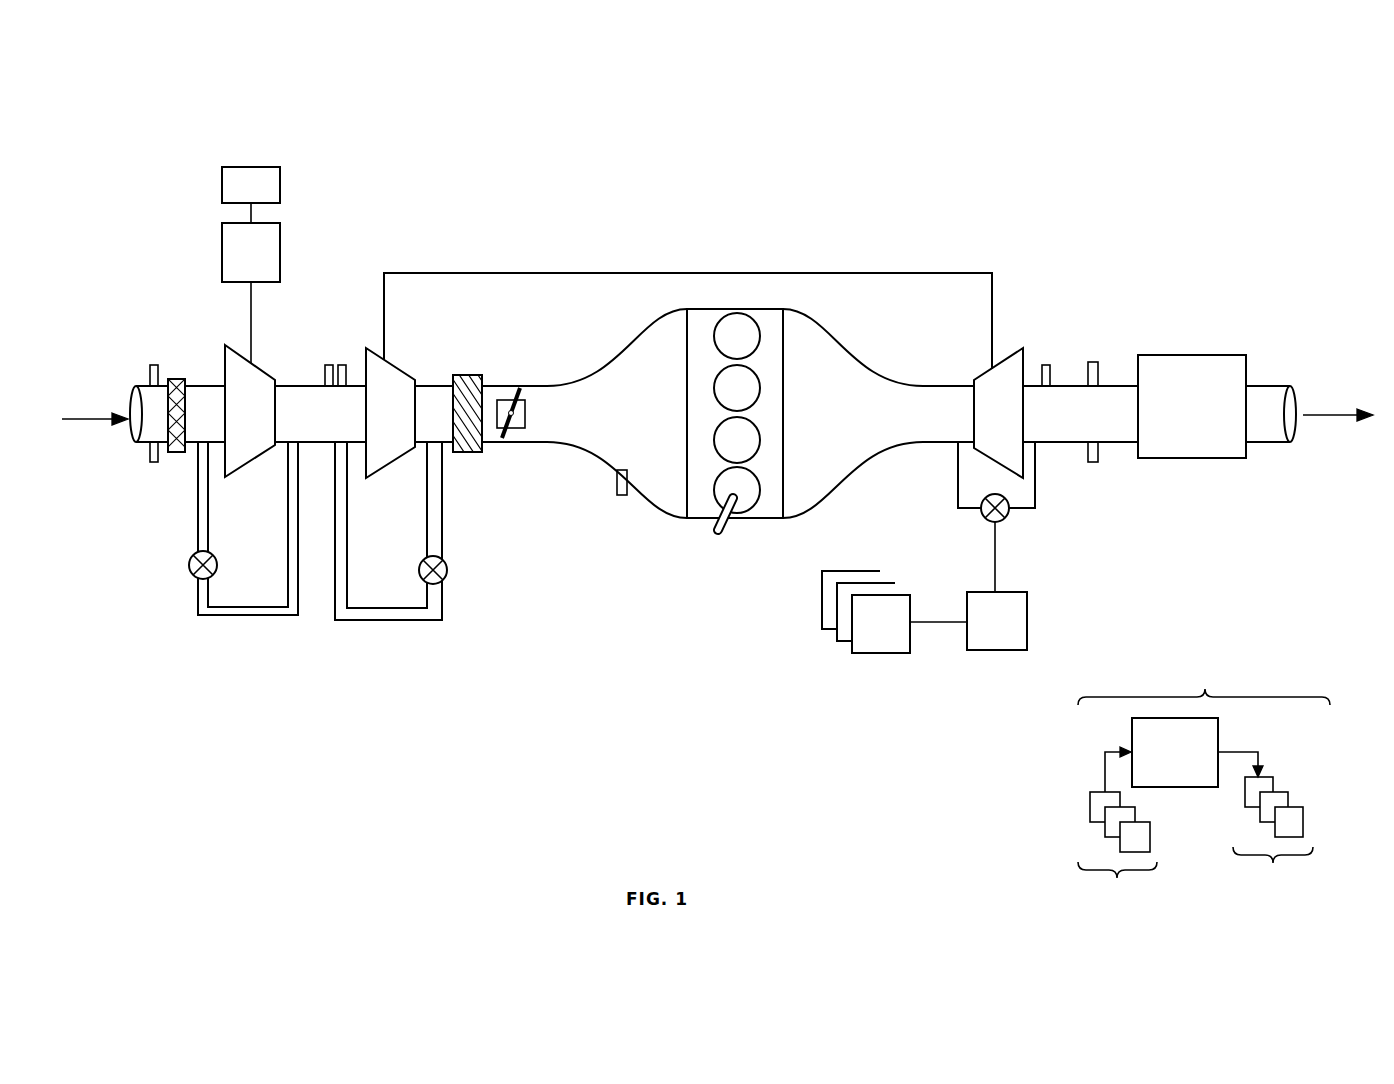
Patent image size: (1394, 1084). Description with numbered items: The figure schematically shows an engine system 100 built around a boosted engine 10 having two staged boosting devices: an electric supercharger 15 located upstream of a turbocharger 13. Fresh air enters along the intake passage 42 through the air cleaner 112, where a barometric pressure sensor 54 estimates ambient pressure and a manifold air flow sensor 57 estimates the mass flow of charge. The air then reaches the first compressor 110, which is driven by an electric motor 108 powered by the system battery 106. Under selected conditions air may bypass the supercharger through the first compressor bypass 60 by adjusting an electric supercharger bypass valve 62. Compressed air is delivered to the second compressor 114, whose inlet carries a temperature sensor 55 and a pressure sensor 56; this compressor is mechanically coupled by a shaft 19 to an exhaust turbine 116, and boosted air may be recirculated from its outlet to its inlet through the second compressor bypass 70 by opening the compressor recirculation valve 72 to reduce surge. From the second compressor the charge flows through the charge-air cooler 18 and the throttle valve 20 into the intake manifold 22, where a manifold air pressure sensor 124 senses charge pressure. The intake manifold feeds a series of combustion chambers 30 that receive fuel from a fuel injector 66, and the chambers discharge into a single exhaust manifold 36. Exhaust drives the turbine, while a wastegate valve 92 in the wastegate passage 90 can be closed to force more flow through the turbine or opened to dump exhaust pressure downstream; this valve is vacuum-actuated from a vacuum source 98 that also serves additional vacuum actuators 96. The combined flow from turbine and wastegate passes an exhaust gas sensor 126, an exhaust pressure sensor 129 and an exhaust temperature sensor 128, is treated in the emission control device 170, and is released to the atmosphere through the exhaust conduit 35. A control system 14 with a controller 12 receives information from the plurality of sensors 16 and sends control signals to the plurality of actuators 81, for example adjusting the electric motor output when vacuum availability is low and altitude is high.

The engine system 100 is at (1259, 155).
The electric supercharger 15 is at (143, 298).
The intake passage 42 is at (146, 444).
The barometric pressure sensor 54 is at (156, 363).
The manifold air flow sensor 57 is at (156, 462).
The air cleaner 112 is at (180, 377).
The first compressor 110 is at (237, 420).
The electric motor 108 is at (238, 262).
The system battery 106 is at (238, 195).
The temperature sensor 55 is at (329, 363).
The pressure sensor 56 is at (342, 363).
The turbocharger 13 is at (432, 312).
The second compressor 114 is at (378, 425).
The shaft 19 is at (892, 275).
The exhaust turbine 116 is at (986, 424).
The first compressor bypass 60 is at (199, 518).
The electric supercharger bypass valve 62 is at (190, 557).
The second compressor bypass 70 is at (428, 520).
The compressor recirculation valve 72 is at (421, 562).
The charge-air cooler 18 is at (467, 374).
The throttle valve 20 is at (527, 418).
The intake manifold 22 is at (632, 425).
The manifold air pressure sensor 124 is at (615, 478).
The engine 10 is at (784, 397).
The combustion chambers 30 is at (758, 327).
The fuel injector 66 is at (735, 528).
The exhaust manifold 36 is at (842, 425).
The wastegate passage 90 is at (958, 490).
The wastegate valve 92 is at (986, 517).
The vacuum actuators 96 is at (870, 638).
The vacuum source 98 is at (985, 635).
The exhaust conduit 35 is at (1267, 384).
The exhaust gas sensor 126 is at (1046, 363).
The exhaust pressure sensor 129 is at (1093, 361).
The exhaust temperature sensor 128 is at (1093, 462).
The emission control device 170 is at (1180, 355).
The control system 14 is at (1204, 773).
The controller 12 is at (1175, 752).
The sensors 16 is at (1117, 831).
The actuators 81 is at (1266, 825).